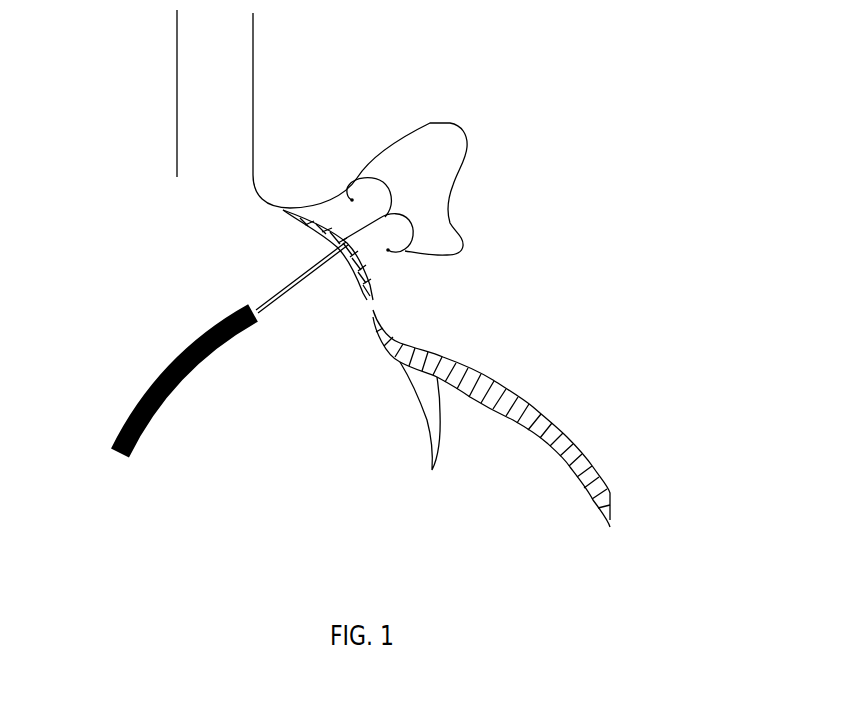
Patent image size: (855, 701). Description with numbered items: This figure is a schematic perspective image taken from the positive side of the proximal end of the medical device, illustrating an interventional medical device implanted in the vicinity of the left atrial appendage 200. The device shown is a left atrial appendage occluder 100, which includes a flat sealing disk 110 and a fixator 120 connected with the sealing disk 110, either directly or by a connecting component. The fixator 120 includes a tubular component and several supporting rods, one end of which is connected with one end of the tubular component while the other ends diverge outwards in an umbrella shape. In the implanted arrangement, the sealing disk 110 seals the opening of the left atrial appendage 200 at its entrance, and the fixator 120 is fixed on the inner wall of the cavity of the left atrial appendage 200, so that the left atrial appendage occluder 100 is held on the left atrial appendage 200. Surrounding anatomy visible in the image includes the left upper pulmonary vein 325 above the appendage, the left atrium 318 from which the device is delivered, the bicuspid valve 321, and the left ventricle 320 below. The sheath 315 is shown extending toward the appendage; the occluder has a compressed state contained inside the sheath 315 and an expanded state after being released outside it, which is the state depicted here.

The left upper pulmonary vein 325 is at (223, 92).
The left atrial appendage 200 is at (438, 117).
The left atrial appendage occluder 100 is at (413, 188).
The fixator 120 is at (415, 225).
The sealing disk 110 is at (363, 268).
The left ventricle 320 is at (482, 457).
The bicuspid valve 321 is at (423, 413).
The left atrium 318 is at (202, 277).
The sheath 315 is at (172, 365).